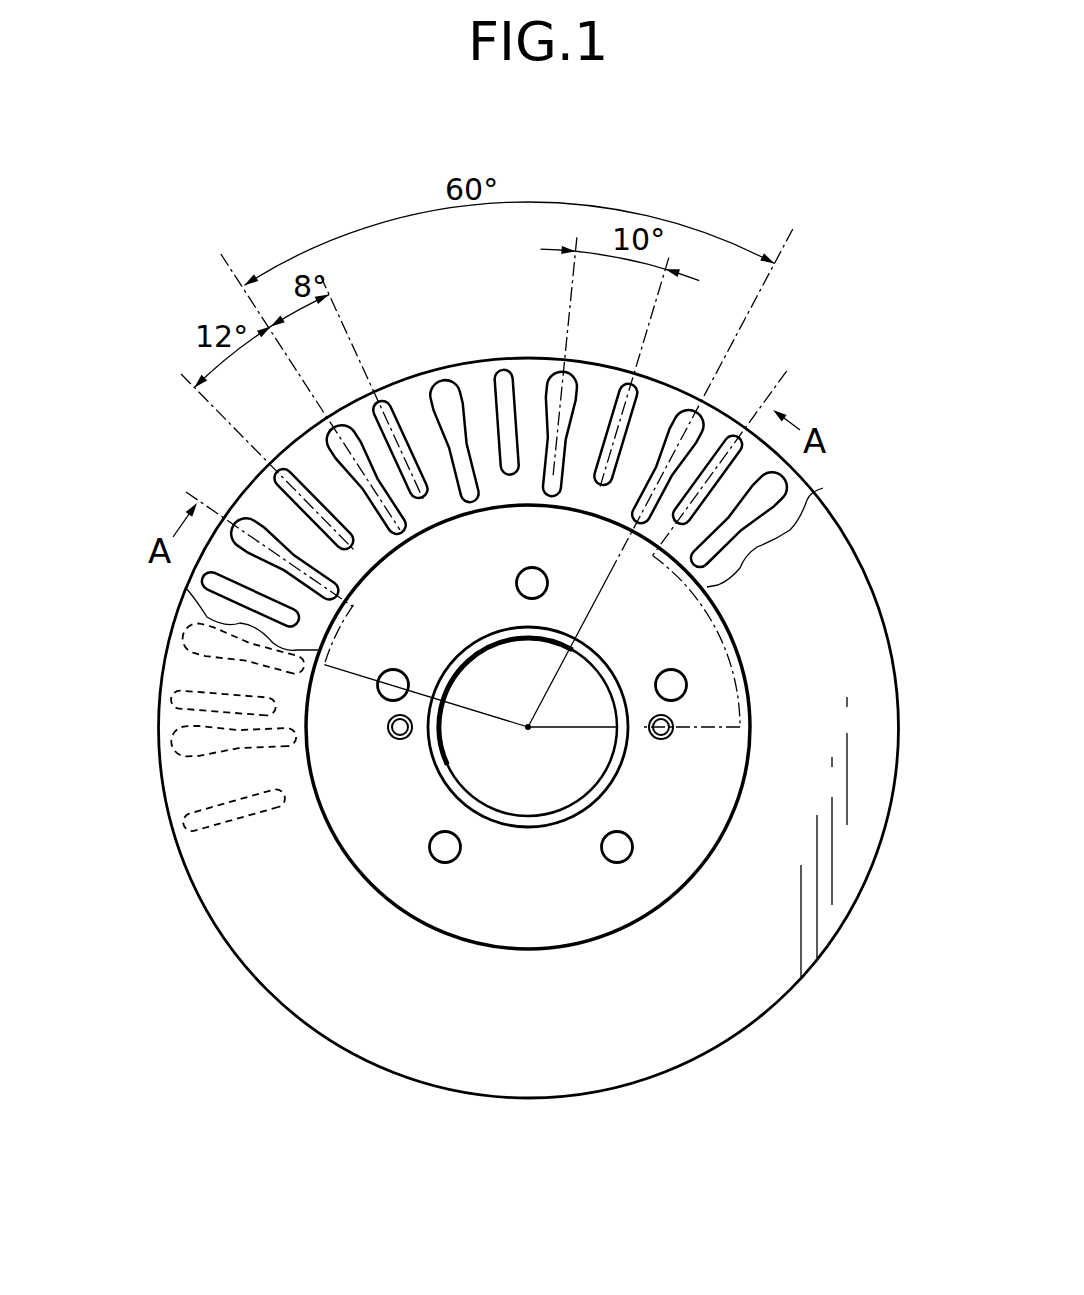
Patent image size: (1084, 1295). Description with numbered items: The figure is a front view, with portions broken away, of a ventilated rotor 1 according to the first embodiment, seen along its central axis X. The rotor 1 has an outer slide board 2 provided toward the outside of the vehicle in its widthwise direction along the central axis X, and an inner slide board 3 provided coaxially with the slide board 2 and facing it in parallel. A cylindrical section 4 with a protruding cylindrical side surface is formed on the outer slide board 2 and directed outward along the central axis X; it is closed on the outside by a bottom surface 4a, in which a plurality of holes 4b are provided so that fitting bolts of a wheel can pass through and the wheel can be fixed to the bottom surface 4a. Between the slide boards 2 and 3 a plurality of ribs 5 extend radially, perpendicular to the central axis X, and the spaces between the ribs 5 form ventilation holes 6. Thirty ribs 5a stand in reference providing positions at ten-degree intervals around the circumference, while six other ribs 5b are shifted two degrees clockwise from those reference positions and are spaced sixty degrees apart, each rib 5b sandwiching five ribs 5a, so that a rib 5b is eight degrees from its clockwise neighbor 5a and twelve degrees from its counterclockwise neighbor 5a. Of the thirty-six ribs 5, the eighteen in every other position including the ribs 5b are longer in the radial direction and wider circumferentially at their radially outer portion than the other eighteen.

The ventilated rotor 1 is at (882, 429).
The slide board 2 is at (823, 488).
The slide board 3 is at (898, 662).
The cylindrical section 4 is at (431, 800).
The bottom surface 4a is at (522, 843).
The holes 4b is at (534, 586).
The ribs 5 is at (493, 392).
The ribs in reference providing positions 5a is at (383, 402).
The shifted ribs 5b is at (692, 405).
The ventilation holes 6 is at (593, 410).
The central axis X is at (529, 728).